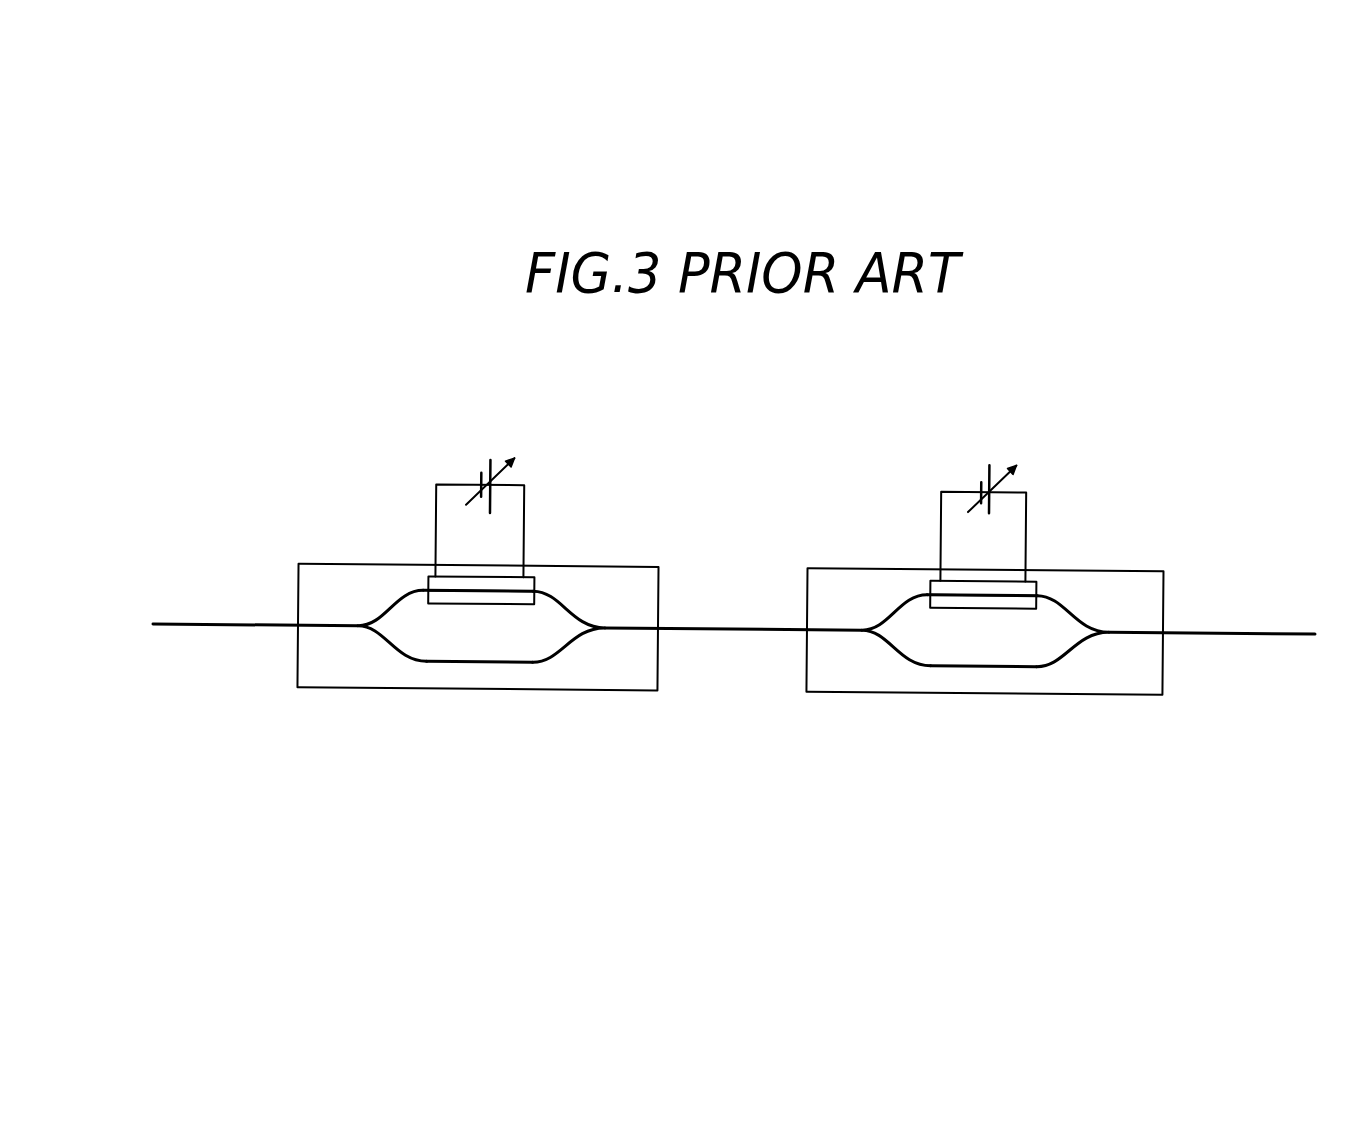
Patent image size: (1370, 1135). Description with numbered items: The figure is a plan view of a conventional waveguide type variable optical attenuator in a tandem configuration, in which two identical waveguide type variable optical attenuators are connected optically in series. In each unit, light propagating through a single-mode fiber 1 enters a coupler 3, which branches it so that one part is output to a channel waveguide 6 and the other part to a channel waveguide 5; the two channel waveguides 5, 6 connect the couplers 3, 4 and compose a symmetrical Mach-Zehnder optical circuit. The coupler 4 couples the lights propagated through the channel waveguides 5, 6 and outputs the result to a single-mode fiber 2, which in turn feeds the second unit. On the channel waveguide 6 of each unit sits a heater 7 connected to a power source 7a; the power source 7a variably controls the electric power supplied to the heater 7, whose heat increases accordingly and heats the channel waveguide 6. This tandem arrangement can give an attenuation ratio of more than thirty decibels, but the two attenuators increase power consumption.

The single-mode fiber 1 is at (197, 624).
The single-mode fiber 2 is at (718, 623).
The coupler 3 is at (357, 627).
The coupler 4 is at (614, 626).
The channel waveguide 5 is at (497, 659).
The channel waveguide 6 is at (573, 603).
The heater 7 is at (541, 577).
The power source 7a is at (1030, 409).